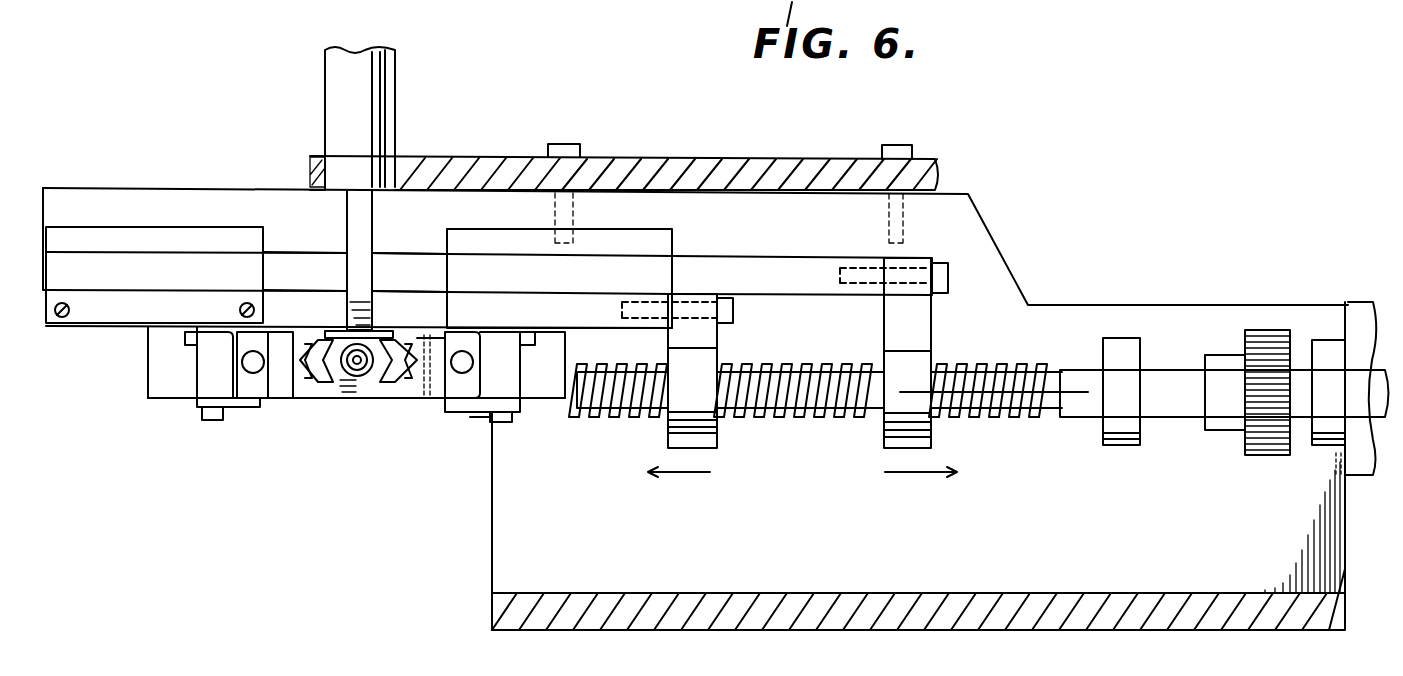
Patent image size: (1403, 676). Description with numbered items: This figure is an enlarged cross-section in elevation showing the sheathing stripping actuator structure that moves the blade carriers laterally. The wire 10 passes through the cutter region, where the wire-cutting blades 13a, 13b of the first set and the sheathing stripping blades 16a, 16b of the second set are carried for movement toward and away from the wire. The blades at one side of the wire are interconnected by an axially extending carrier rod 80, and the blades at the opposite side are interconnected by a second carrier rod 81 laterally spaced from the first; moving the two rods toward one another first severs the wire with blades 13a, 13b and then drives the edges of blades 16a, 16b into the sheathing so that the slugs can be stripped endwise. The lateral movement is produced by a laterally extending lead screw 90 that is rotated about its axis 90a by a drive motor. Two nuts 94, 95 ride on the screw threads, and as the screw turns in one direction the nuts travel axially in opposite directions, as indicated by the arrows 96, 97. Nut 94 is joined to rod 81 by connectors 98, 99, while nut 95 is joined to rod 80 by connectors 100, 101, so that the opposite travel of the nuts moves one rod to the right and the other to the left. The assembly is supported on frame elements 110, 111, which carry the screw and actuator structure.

The wire 10 is at (350, 392).
The wire-cutting blade 13a is at (313, 397).
The wire-cutting blade 13b is at (393, 393).
The sheathing stripping blade 16a is at (290, 330).
The sheathing stripping blade 16b is at (420, 330).
The carrier rod 80 is at (253, 390).
The carrier rod 81 is at (433, 382).
The lead screw 90 is at (775, 420).
The lead screw axis 90a is at (1083, 393).
The nut 94 is at (690, 412).
The nut 95 is at (907, 360).
The arrow 96 is at (683, 472).
The arrow 97 is at (900, 472).
The connector 98 is at (590, 279).
The connector 99 is at (505, 373).
The connector 100 is at (758, 262).
The connector 101 is at (205, 363).
The frame element 110 is at (627, 157).
The frame element 111 is at (960, 217).